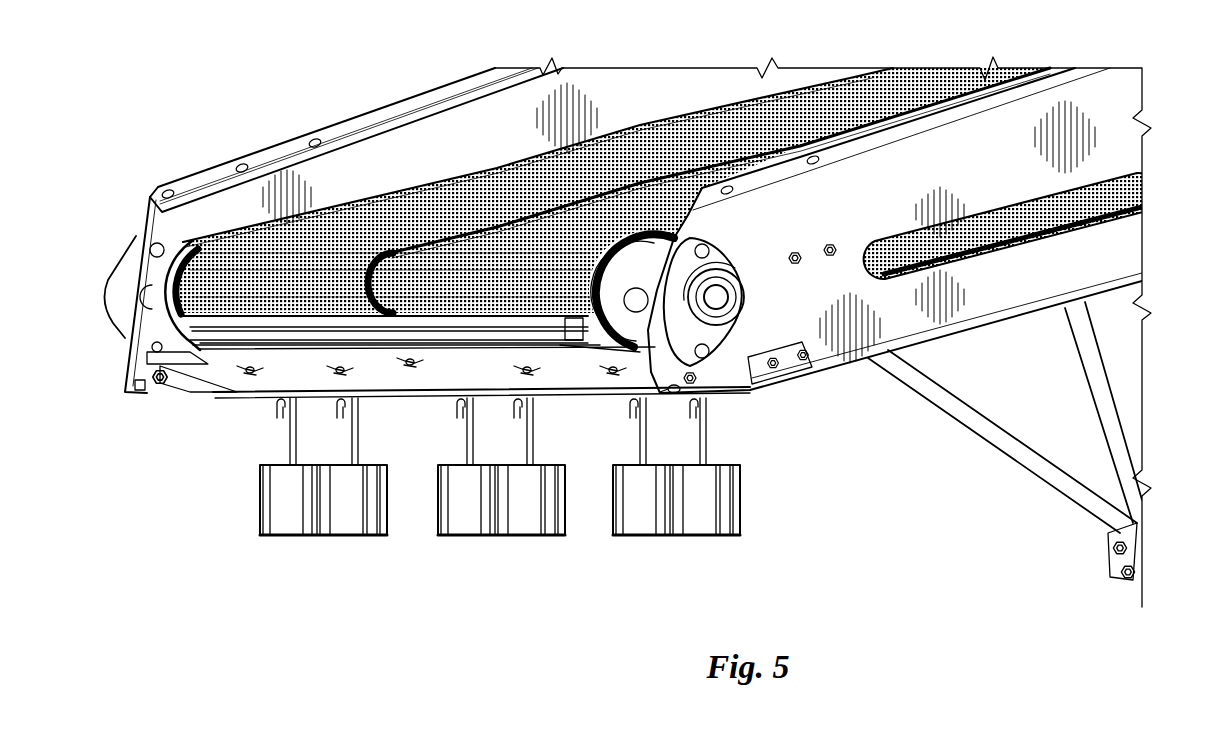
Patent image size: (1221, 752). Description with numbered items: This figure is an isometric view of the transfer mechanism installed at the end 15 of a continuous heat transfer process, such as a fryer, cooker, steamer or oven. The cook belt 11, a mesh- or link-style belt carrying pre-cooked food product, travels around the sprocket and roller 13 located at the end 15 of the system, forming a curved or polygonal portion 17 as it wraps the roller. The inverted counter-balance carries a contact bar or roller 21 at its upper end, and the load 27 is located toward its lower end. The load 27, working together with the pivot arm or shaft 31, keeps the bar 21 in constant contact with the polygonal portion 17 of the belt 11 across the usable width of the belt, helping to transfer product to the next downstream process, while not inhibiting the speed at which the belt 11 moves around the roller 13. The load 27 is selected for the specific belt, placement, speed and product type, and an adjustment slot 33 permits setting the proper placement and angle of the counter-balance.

The cook belt 11 is at (400, 217).
The sprocket and roller 13 is at (637, 265).
The end 15 is at (176, 236).
The curved or polygonal portion 17 is at (290, 292).
The contact bar or roller 21 is at (532, 327).
The load 27 is at (317, 541).
The pivot arm or shaft 31 is at (688, 380).
The adjustment slot 33 is at (682, 393).